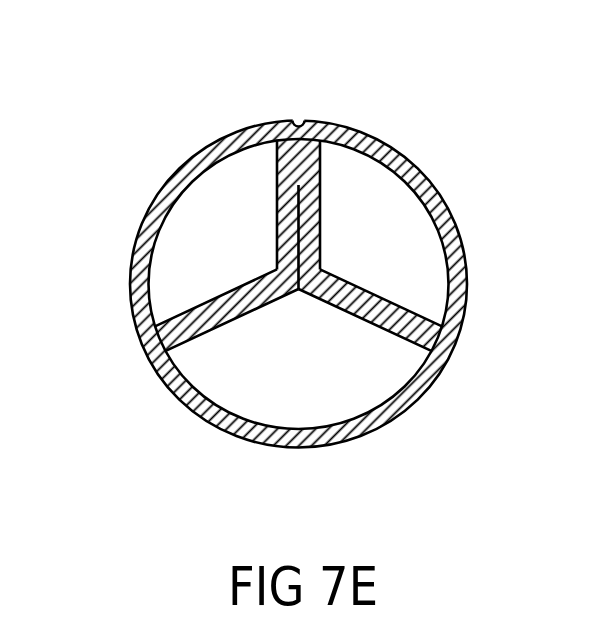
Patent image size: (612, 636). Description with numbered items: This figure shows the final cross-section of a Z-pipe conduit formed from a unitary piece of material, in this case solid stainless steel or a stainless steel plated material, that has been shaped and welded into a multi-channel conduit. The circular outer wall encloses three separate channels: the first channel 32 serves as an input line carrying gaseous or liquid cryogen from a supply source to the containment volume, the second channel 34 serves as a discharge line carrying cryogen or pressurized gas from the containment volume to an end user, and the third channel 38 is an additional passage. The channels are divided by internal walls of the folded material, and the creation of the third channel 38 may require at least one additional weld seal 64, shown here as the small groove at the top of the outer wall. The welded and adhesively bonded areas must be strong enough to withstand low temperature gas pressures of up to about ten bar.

The first channel 32 is at (387, 230).
The second channel 34 is at (210, 223).
The third channel 38 is at (320, 390).
The additional weld seal 64 is at (298, 122).